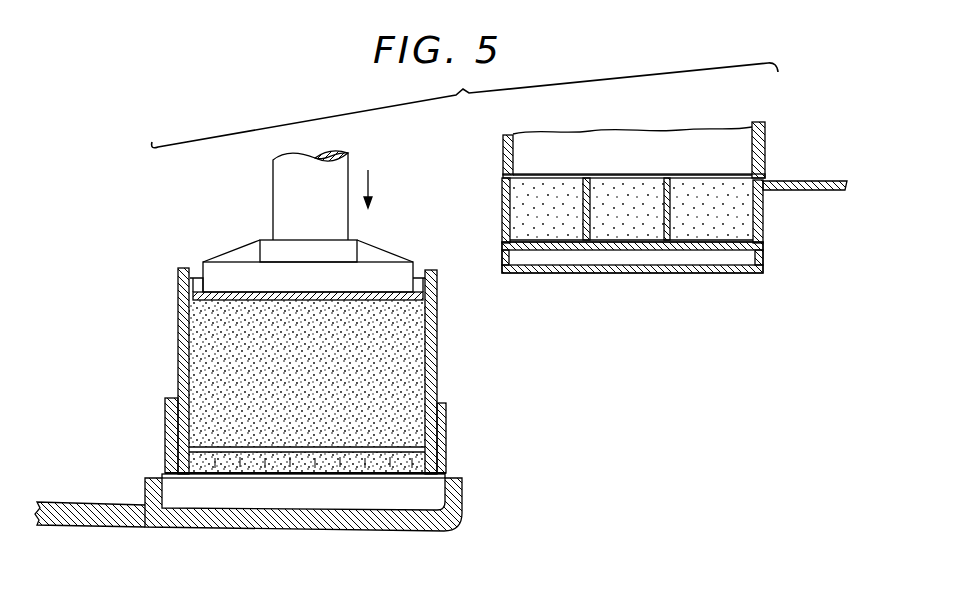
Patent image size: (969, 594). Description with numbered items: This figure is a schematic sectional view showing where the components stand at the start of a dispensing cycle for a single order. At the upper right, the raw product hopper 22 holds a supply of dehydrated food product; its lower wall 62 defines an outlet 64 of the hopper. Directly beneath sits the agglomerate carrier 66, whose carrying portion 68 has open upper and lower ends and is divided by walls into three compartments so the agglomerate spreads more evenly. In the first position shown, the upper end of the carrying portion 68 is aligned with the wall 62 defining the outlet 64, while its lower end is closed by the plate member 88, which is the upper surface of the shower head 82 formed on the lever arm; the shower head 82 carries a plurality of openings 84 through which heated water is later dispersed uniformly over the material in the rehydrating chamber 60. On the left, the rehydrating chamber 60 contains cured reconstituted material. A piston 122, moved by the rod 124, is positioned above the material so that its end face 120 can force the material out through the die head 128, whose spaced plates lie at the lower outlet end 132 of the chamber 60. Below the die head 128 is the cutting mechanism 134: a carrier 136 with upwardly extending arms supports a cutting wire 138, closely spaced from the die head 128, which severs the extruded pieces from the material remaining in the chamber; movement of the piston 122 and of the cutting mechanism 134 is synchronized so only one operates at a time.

The raw product hopper 22 is at (771, 136).
The lower wall 62 is at (503, 149).
The outlet 64 is at (642, 173).
The agglomerate carrier 66 is at (766, 234).
The carrying portion 68 is at (763, 205).
The shower head 82 is at (728, 273).
The openings 84 is at (613, 273).
The plate member 88 is at (543, 232).
The rod 124 is at (288, 202).
The piston 122 is at (363, 270).
The rehydrating chamber 60 is at (178, 333).
The end face 120 is at (278, 301).
The lower outlet end 132 is at (250, 447).
The die head 128 is at (450, 451).
The cutting wire 138 is at (303, 482).
The cutting mechanism 134 is at (466, 509).
The carrier 136 is at (108, 520).